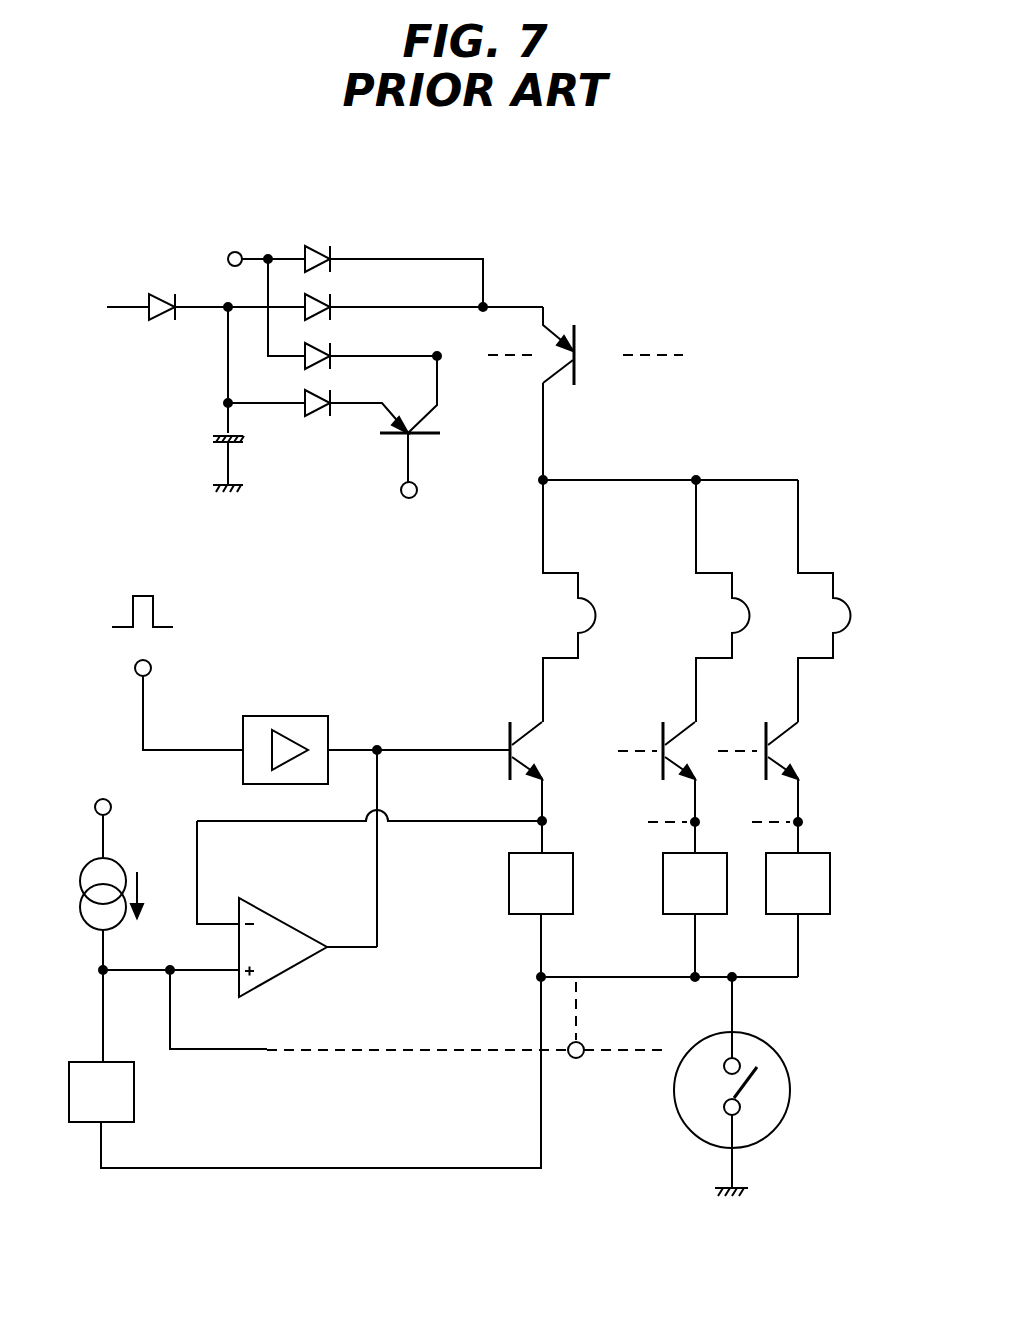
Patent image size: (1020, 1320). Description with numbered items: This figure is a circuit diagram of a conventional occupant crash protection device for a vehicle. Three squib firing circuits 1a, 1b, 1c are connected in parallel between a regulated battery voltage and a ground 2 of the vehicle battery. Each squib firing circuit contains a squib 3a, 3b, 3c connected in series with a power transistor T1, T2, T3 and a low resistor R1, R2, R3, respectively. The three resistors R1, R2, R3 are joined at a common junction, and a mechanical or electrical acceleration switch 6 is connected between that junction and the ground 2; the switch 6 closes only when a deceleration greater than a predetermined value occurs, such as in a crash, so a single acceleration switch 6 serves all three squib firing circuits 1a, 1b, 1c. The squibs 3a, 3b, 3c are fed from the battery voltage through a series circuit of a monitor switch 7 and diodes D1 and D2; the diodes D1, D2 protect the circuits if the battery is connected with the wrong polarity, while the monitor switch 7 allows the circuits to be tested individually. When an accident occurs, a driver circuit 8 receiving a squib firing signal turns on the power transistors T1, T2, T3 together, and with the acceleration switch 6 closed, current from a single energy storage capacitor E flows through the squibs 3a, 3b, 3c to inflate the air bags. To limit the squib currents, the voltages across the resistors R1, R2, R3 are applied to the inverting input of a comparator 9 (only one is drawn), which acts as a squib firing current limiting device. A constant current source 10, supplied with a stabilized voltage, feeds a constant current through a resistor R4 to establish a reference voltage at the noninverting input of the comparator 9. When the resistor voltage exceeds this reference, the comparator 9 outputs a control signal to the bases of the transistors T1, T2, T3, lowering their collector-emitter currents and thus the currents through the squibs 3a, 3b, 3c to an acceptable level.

The squib firing circuit 1a is at (589, 601).
The squib firing circuit 1b is at (743, 601).
The squib firing circuit 1c is at (834, 601).
The squib 3a is at (584, 546).
The squib 3b is at (738, 546).
The squib 3c is at (841, 546).
The monitor switch 7 is at (560, 327).
The driver circuit 8 is at (300, 716).
The comparator 9 is at (277, 913).
The constant current source 10 is at (115, 862).
The acceleration switch 6 is at (777, 1048).
The ground 2 is at (753, 1192).
The diode D1 is at (143, 326).
The diode D2 is at (355, 276).
The energy storage capacitor E is at (236, 447).
The power transistor T1 is at (539, 787).
The power transistor T2 is at (669, 787).
The power transistor T3 is at (771, 787).
The low resistor R1 is at (541, 883).
The low resistor R2 is at (695, 883).
The low resistor R3 is at (798, 883).
The resistor R4 is at (101, 1046).